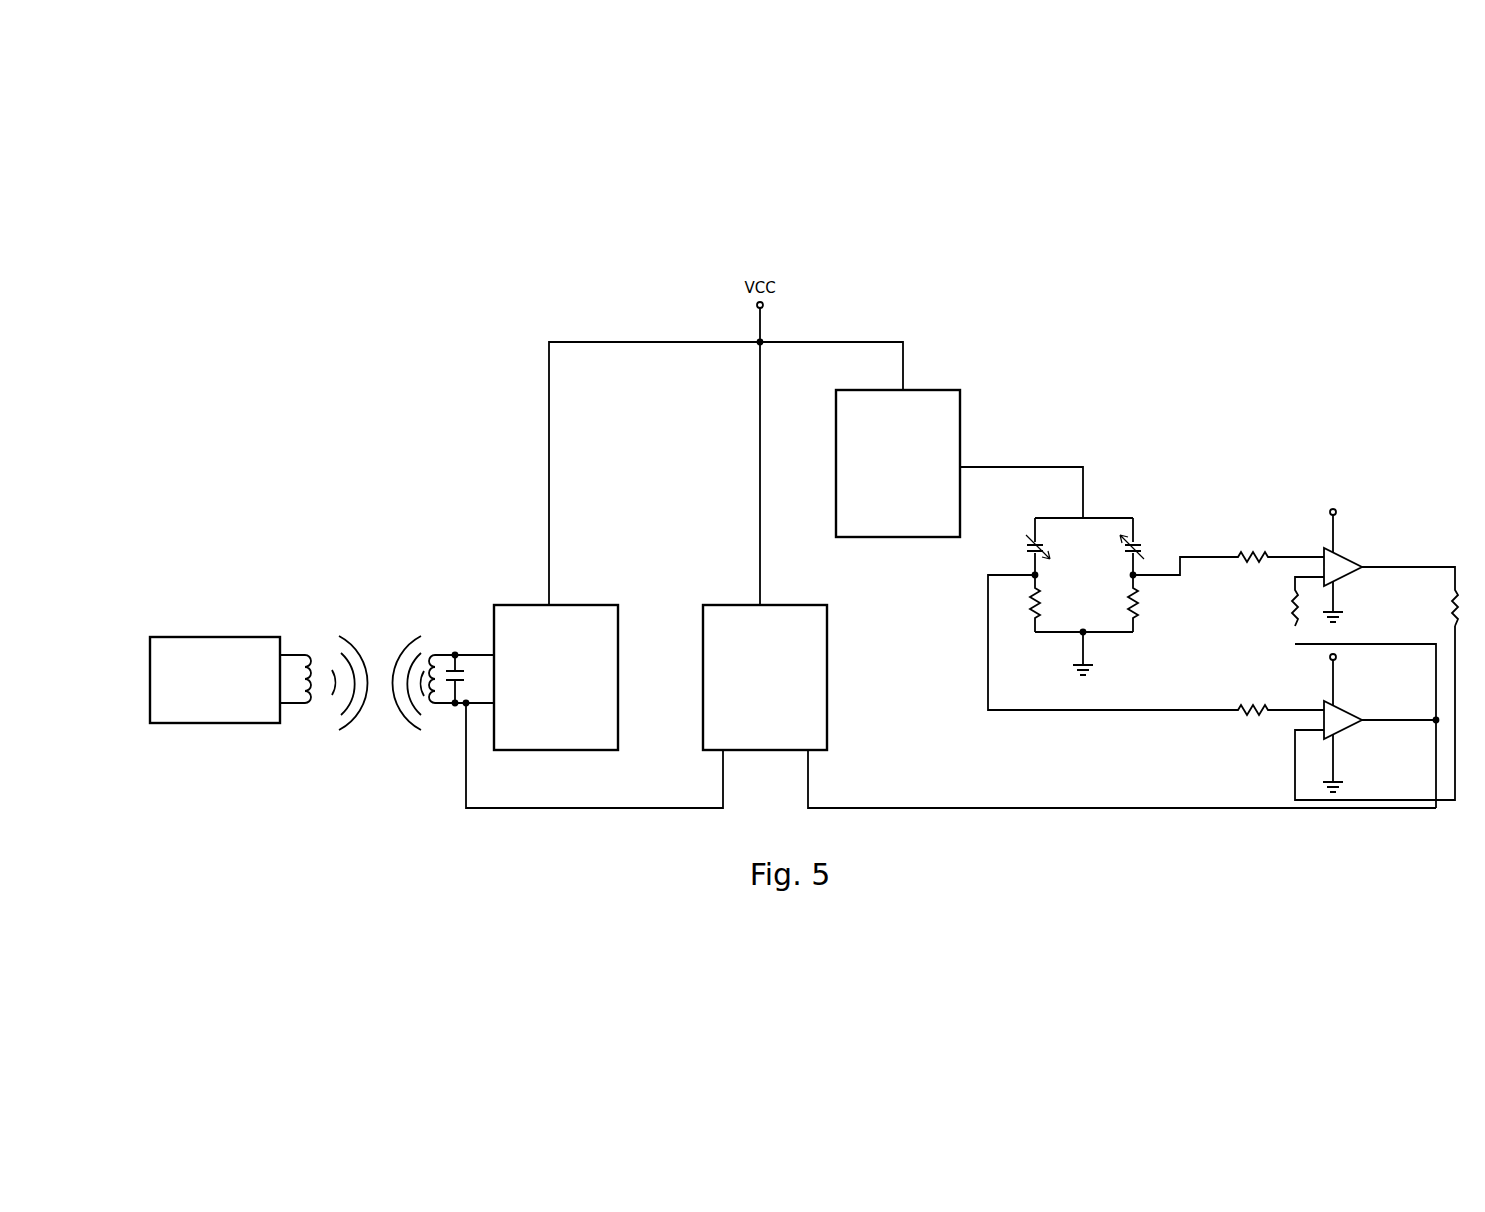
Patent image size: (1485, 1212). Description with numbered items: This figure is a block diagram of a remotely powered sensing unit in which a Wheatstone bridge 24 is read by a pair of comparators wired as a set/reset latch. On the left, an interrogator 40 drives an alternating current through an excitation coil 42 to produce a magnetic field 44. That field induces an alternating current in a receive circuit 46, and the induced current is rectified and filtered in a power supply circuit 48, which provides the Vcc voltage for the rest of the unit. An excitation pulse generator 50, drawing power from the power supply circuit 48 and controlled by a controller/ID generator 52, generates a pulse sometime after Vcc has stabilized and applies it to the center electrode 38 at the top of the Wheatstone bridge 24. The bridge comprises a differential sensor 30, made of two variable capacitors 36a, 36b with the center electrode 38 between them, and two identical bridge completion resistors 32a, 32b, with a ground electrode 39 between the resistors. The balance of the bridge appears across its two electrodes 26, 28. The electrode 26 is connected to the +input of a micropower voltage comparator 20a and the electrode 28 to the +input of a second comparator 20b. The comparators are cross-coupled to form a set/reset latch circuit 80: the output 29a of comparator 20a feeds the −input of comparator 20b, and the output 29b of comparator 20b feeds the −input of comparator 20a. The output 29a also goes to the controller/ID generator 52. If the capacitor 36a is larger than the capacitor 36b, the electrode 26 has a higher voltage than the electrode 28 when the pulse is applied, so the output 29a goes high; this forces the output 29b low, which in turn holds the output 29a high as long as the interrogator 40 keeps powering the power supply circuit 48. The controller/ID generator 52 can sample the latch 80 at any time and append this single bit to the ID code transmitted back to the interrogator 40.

The interrogator 40 is at (257, 645).
The excitation coil 42 is at (307, 712).
The magnetic field 44 is at (353, 657).
The receive circuit 46 is at (440, 652).
The power supply circuit 48 is at (573, 635).
The excitation pulse generator 50 is at (945, 408).
The controller/ID generator 52 is at (803, 632).
The center electrode 38 is at (1083, 517).
The differential sensor 30 is at (1172, 537).
The variable capacitor 36a is at (1045, 538).
The variable capacitor 36b is at (1158, 540).
The bridge completion resistor 32a is at (1038, 602).
The bridge completion resistor 32b is at (1138, 602).
The Wheatstone bridge 24 is at (1080, 620).
The ground electrode 39 is at (1092, 635).
The electrode 26 is at (1020, 575).
The electrode 28 is at (1137, 575).
The set/reset latch circuit 80 is at (1382, 538).
The micropower voltage comparator 20a is at (1343, 720).
The micropower voltage comparator 20b is at (1340, 567).
The output 29a is at (1387, 722).
The output 29b is at (1410, 567).